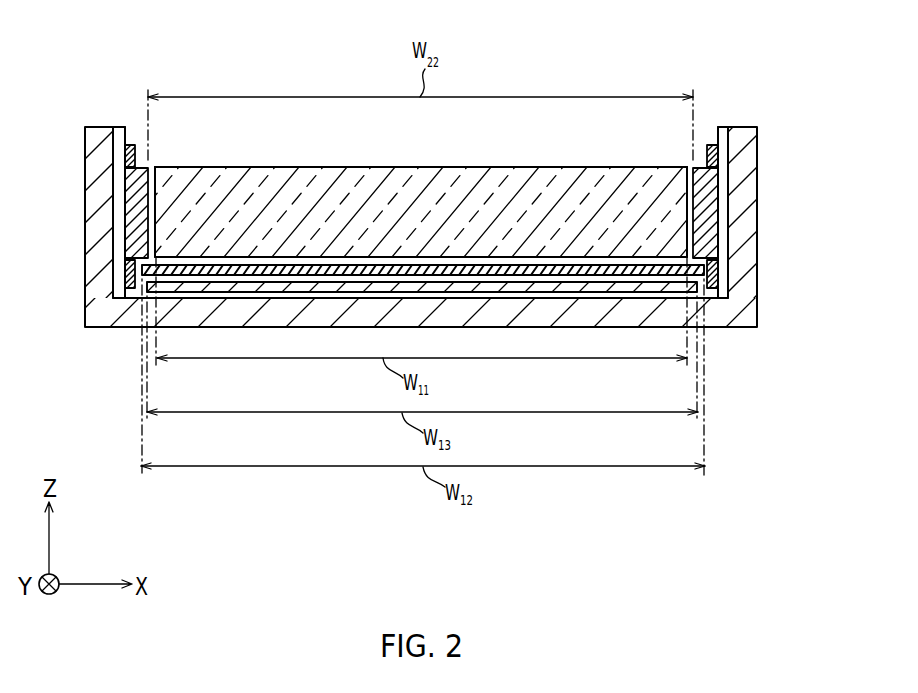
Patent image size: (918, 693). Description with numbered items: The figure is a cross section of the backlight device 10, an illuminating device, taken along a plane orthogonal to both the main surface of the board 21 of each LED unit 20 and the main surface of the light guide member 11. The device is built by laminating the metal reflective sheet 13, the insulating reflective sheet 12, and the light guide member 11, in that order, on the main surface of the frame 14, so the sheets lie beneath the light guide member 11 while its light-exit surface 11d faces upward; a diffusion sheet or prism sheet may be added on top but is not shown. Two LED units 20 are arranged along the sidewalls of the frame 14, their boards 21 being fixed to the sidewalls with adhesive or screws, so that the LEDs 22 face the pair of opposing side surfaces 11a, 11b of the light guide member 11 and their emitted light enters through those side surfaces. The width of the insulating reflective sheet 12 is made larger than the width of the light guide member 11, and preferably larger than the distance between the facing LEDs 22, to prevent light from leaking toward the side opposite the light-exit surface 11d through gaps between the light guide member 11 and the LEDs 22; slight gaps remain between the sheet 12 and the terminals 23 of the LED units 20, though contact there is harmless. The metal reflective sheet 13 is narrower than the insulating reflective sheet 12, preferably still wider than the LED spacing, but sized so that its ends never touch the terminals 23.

The backlight device 10 is at (625, 73).
The light guide member 11 is at (403, 183).
The side surface of light guide member 11a is at (153, 217).
The side surface of light guide member 11b is at (688, 212).
The light-exit surface 11d is at (287, 167).
The insulating reflective sheet 12 is at (480, 265).
The metal reflective sheet 13 is at (530, 283).
The frame 14 is at (745, 130).
The LED unit 20 is at (419, 171).
The board 21 is at (120, 128).
The LED 22 is at (137, 190).
The terminal 23 is at (132, 265).